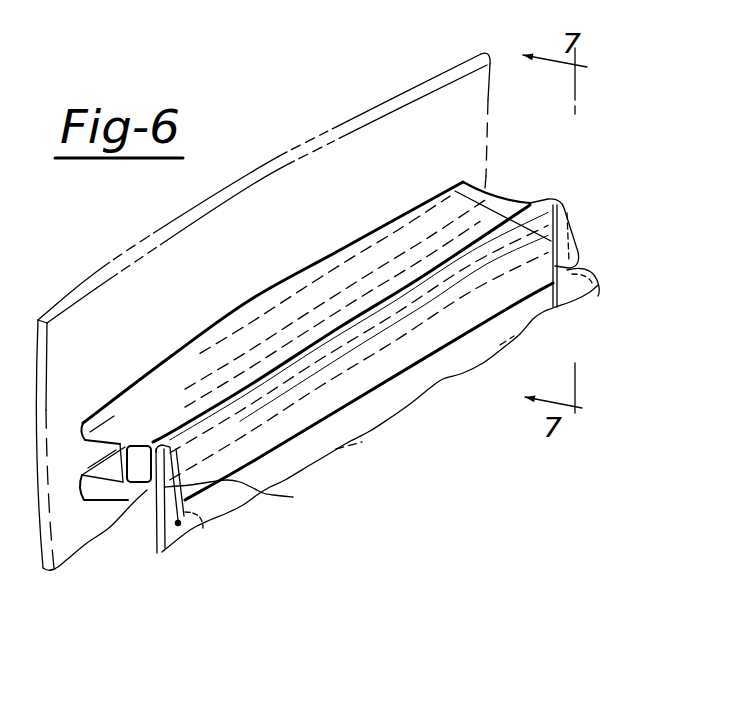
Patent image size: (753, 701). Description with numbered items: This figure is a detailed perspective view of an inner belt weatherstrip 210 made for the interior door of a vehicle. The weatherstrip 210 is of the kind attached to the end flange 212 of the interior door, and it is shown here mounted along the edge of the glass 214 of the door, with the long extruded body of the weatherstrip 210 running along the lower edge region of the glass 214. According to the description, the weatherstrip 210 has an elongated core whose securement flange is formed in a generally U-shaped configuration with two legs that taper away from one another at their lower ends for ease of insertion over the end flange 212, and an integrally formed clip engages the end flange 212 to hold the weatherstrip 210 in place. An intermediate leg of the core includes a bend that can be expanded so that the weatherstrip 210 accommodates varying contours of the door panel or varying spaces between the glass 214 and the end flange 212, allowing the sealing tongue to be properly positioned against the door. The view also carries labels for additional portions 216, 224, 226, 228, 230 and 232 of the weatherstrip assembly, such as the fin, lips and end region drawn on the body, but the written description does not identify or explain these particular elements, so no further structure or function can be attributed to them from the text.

The belt weatherstrip 210 is at (600, 113).
The end flange 212 is at (170, 437).
The glass 214 is at (453, 97).
The fin 216 is at (157, 553).
The sealing lip 224 is at (148, 508).
The sealing lip 226 is at (254, 498).
The lower lip 228 is at (600, 280).
The lip edge 230 is at (178, 523).
The end cap 232 is at (600, 262).